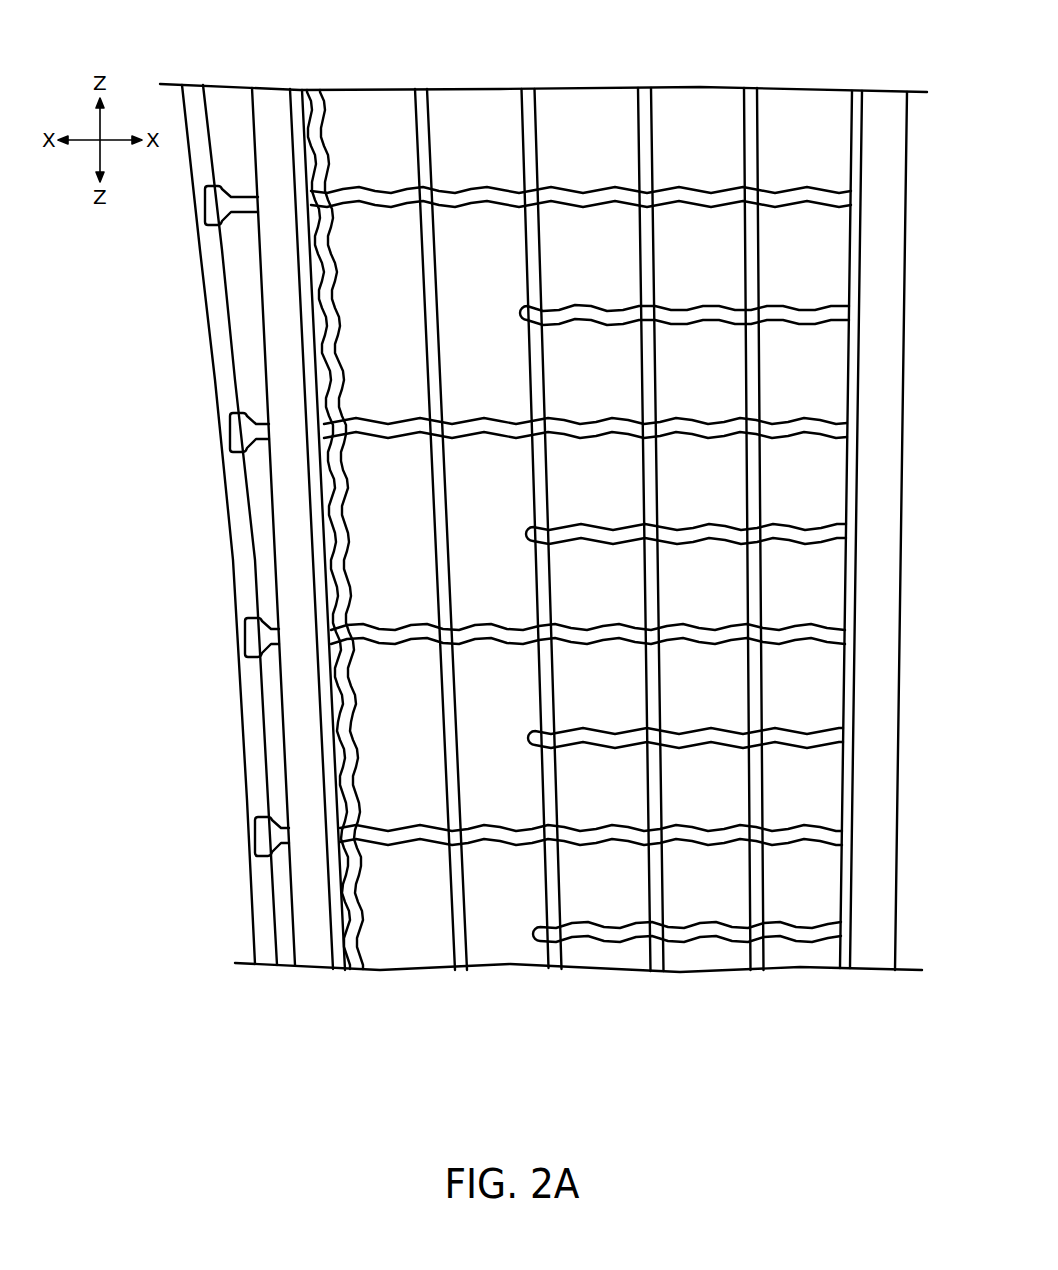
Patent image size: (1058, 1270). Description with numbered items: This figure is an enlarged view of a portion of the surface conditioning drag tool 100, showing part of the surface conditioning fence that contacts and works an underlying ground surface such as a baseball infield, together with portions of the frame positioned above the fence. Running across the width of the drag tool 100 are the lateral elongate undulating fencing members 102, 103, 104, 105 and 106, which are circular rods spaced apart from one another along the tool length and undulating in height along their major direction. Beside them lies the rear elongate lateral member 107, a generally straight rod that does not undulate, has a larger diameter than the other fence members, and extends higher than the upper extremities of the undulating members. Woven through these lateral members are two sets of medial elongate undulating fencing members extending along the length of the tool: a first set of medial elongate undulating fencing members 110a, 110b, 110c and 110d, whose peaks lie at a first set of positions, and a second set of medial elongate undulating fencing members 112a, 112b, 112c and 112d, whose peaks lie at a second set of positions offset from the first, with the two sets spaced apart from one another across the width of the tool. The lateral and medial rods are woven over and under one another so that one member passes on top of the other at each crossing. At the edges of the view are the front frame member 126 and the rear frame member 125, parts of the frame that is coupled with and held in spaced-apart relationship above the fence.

The surface conditioning drag tool 100 is at (887, 40).
The lateral elongate undulating fencing member 102 is at (753, 96).
The lateral elongate undulating fencing member 103 is at (645, 96).
The lateral elongate undulating fencing member 104 is at (530, 96).
The lateral elongate undulating fencing member 105 is at (424, 96).
The lateral elongate undulating fencing member 106 is at (316, 96).
The rear elongate lateral member 107 is at (192, 95).
The medial elongate undulating fencing member 110a is at (700, 190).
The medial elongate undulating fencing member 110b is at (700, 421).
The medial elongate undulating fencing member 110c is at (700, 627).
The medial elongate undulating fencing member 110d is at (700, 828).
The medial elongate undulating fencing member 112a is at (700, 308).
The medial elongate undulating fencing member 112b is at (700, 527).
The medial elongate undulating fencing member 112c is at (700, 731).
The medial elongate undulating fencing member 112d is at (700, 925).
The rear frame member 125 is at (877, 588).
The front frame member 126 is at (284, 580).